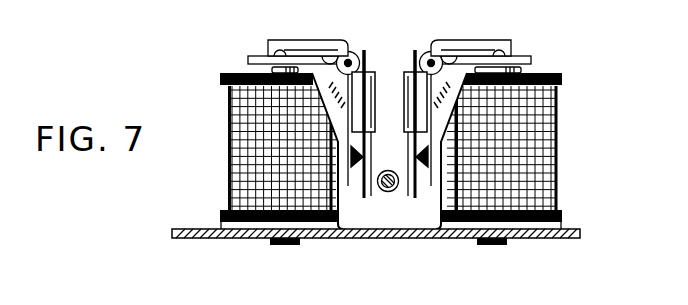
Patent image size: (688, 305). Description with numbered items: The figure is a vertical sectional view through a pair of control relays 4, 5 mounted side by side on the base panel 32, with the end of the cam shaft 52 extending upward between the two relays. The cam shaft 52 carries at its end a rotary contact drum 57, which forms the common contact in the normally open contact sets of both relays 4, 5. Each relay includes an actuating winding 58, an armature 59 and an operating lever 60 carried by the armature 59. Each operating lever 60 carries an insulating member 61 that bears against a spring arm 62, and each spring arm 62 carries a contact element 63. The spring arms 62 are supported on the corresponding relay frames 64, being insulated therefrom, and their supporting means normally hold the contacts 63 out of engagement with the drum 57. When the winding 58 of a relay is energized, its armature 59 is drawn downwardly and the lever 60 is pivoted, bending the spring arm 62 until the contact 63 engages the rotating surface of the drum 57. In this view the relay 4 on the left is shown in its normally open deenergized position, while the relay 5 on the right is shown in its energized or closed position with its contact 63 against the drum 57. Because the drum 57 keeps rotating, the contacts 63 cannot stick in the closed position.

The control relay 4 is at (283, 163).
The control relay 5 is at (508, 161).
The base panel 32 is at (568, 228).
The cam shaft 52 is at (382, 174).
The rotary contact drum 57 is at (386, 194).
The actuating winding 58 is at (399, 148).
The armature 59 is at (253, 58).
The operating lever 60 is at (331, 117).
The insulating member 61 is at (350, 156).
The spring arm 62 is at (415, 52).
The contact element 63 is at (368, 186).
The relay frame 64 is at (306, 44).